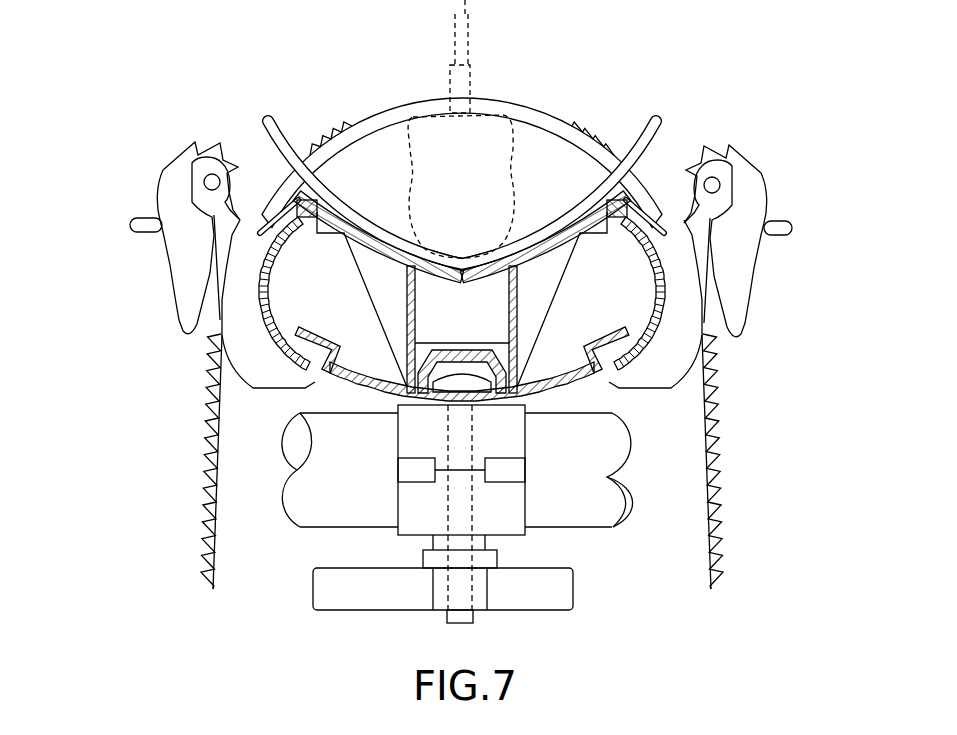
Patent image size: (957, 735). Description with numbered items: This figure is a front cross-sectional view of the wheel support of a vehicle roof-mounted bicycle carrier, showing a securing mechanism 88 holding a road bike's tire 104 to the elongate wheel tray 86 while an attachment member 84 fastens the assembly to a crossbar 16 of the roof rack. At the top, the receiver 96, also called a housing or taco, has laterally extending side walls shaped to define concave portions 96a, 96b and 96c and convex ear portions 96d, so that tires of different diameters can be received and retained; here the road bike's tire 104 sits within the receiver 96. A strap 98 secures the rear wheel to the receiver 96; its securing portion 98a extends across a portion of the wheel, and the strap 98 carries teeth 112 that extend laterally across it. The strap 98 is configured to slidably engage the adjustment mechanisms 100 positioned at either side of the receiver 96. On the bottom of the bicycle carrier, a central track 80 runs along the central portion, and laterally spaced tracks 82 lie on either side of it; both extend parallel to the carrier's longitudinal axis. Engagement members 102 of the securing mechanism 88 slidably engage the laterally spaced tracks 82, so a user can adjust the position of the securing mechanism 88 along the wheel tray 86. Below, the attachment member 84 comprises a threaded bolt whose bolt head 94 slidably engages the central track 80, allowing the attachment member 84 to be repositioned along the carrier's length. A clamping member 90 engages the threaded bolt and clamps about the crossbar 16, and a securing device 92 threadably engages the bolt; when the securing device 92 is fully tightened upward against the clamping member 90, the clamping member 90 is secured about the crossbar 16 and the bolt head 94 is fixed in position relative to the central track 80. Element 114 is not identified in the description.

The crossbar 16 is at (590, 527).
The central track 80 is at (490, 348).
The laterally spaced tracks 82 is at (313, 328).
The attachment member 84 is at (558, 618).
The elongate wheel tray 86 is at (533, 262).
The securing mechanism 88 is at (712, 90).
The clamping member 90 is at (398, 543).
The securing device 92 is at (313, 586).
The bolt head 94 is at (460, 378).
The receiver 96 is at (387, 234).
The concave portion 96a is at (384, 176).
The concave portion 96b is at (462, 258).
The concave portion 96c is at (582, 200).
The ear portions 96d is at (304, 94).
The strap 98 is at (218, 542).
The securing portion 98a is at (524, 74).
The adjustment mechanisms 100 is at (128, 193).
The engagement members 102 is at (322, 356).
The road bike's tire 104 is at (510, 176).
The teeth 112 is at (212, 384).
The clamp arm 114 is at (160, 180).